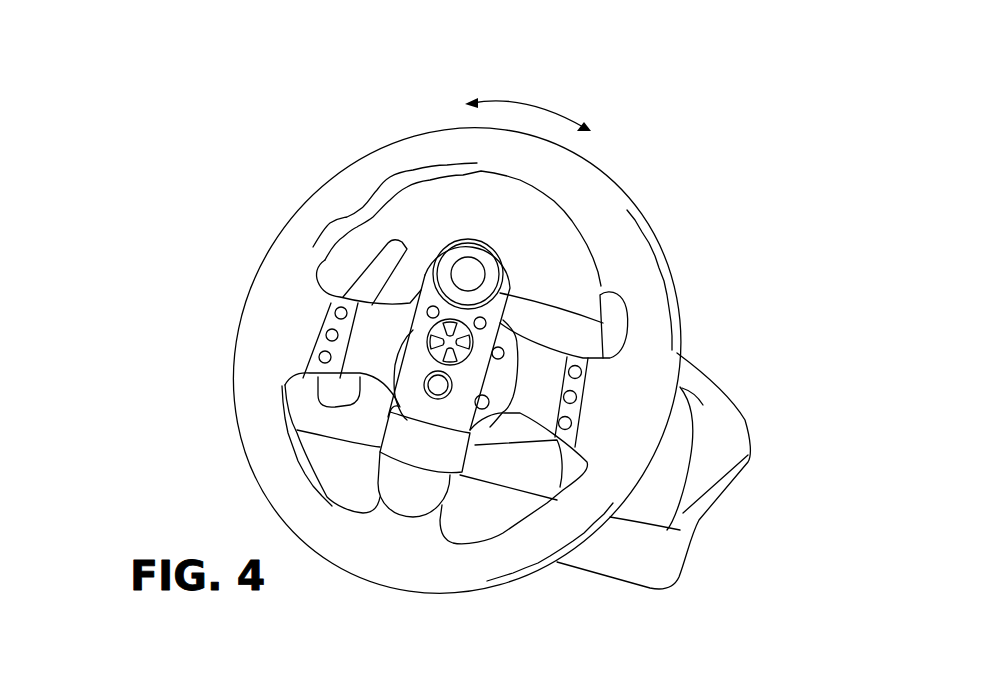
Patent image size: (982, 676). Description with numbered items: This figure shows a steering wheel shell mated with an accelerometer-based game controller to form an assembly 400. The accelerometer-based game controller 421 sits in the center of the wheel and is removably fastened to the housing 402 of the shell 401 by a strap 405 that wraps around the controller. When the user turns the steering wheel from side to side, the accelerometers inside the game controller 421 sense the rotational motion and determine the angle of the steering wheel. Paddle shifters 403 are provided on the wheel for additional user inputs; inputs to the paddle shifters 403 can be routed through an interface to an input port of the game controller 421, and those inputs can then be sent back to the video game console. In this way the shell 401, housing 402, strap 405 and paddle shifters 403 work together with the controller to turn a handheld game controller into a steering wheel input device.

The assembly 400 is at (272, 84).
The shell 401 is at (735, 388).
The housing 402 is at (613, 177).
The paddle shifters 403 is at (372, 277).
The strap 405 is at (442, 461).
The accelerometer-based game controller 421 is at (483, 243).